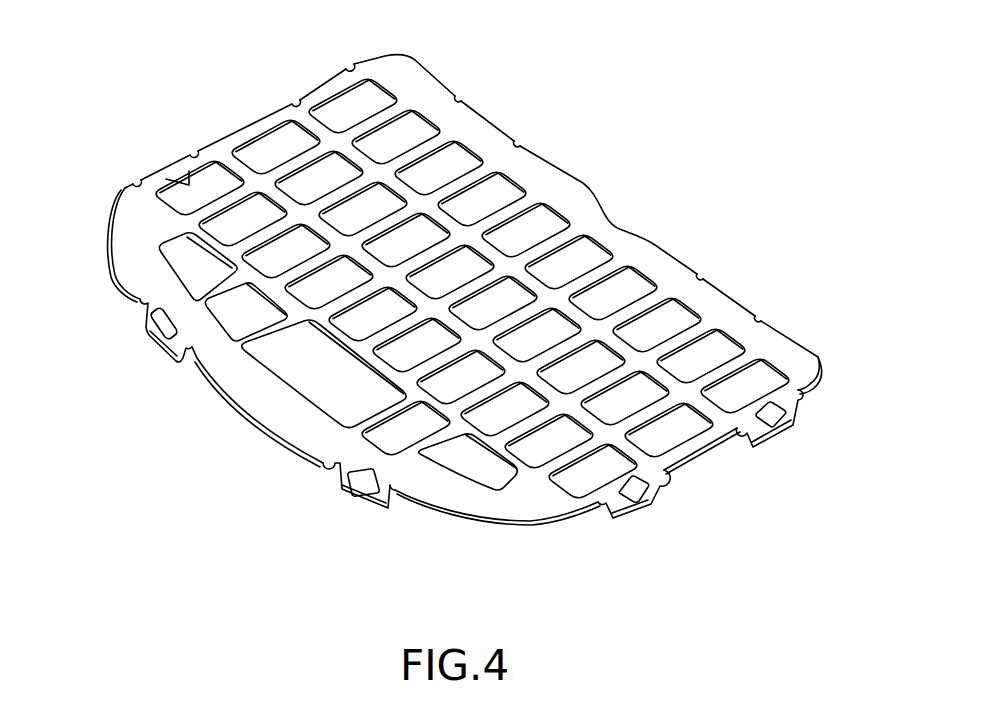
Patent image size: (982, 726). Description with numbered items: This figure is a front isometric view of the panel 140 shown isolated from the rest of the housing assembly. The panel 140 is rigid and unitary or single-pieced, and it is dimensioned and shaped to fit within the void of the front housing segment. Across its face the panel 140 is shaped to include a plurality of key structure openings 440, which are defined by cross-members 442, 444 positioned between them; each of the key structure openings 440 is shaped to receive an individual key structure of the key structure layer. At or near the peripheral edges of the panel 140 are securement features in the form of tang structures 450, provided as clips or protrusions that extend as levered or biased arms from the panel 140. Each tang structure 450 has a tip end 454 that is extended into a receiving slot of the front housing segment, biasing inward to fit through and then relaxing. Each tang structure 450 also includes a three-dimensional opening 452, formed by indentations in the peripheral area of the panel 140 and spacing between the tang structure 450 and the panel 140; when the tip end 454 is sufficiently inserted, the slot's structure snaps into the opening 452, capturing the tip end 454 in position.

The panel 140 is at (693, 240).
The key structure openings 440 is at (343, 112).
The cross-member 442 is at (213, 193).
The cross-member 444 is at (453, 214).
The tang structure 450 is at (147, 344).
The opening 452 is at (147, 328).
The tip end 454 is at (165, 353).